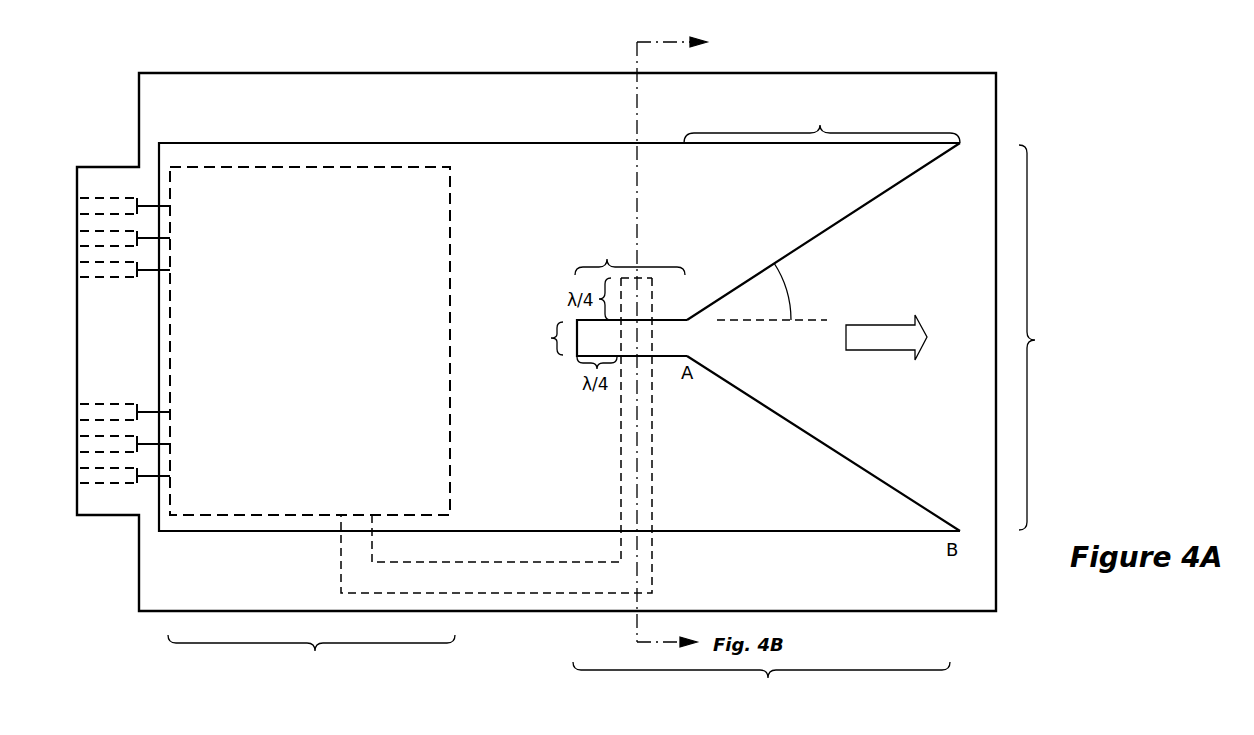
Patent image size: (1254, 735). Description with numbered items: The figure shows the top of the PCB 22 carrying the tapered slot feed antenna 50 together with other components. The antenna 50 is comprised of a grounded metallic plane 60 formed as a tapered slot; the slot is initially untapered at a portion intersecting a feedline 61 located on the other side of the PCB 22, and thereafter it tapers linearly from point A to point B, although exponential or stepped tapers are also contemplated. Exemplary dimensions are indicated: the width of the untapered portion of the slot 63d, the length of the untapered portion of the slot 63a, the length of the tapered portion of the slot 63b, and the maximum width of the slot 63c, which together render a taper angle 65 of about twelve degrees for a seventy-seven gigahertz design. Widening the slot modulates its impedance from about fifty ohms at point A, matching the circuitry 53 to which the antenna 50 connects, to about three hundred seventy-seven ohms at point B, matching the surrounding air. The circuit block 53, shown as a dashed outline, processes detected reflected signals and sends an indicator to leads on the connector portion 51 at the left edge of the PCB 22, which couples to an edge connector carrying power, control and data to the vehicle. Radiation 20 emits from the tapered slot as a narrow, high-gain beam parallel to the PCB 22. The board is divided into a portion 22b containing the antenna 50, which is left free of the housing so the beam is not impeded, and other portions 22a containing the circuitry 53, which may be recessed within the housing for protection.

The PCB 22 is at (1024, 82).
The tapered slot feed antenna 50 is at (894, 119).
The grounded metallic plane 60 is at (534, 143).
The feedline 61 is at (443, 577).
The circuit block 53 is at (324, 349).
The connector portion 51 is at (142, 635).
The other portions of the PCB 22a is at (311, 661).
The portion of the PCB containing the tapered slot feed antenna 22b is at (761, 686).
The length of the untapered portion of the slot 63a is at (606, 258).
The length of the tapered portion of the slot 63b is at (822, 121).
The maximum width of the slot 63c is at (1036, 340).
The width of the untapered portion of the slot 63d is at (536, 338).
The taper angle 65 is at (772, 291).
The radiation 20 is at (866, 335).